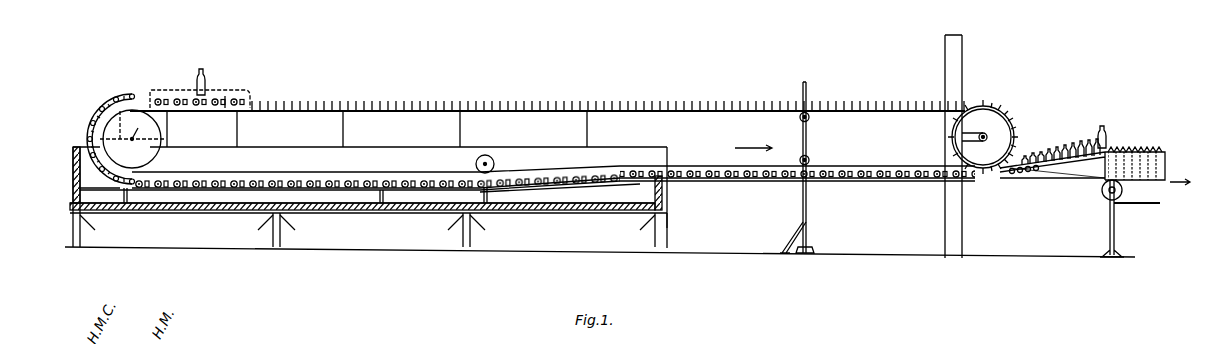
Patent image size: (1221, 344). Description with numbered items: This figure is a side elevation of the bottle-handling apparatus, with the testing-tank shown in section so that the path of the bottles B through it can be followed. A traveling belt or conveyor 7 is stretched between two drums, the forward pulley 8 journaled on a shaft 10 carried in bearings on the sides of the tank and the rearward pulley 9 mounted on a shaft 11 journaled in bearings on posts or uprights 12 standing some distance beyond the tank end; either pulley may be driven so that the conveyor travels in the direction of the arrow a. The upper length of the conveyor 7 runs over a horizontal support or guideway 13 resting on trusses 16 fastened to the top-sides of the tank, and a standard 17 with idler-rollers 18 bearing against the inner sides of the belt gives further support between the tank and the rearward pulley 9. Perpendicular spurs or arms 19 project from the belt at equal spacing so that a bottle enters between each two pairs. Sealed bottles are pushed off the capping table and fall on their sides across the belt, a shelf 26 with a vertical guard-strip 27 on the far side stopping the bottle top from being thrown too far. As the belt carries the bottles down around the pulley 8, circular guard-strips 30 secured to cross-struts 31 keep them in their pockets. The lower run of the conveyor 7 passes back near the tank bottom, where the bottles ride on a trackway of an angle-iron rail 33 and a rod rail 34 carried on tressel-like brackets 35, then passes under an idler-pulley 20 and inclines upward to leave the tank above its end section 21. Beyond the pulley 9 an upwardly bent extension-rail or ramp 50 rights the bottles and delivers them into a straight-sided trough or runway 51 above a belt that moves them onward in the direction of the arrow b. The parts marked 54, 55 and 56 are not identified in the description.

The traveling belt or conveyor 7 is at (170, 172).
The forward pulley 8 is at (132, 139).
The rearward pulley 9 is at (983, 137).
The shaft 10 is at (139, 127).
The shaft 11 is at (985, 141).
The posts or uprights 12 is at (947, 205).
The horizontal support or guideway 13 is at (398, 114).
The trusses 16 is at (178, 129).
The standard 17 is at (806, 222).
The idler-rollers 18 is at (809, 117).
The spurs or arms 19 is at (742, 110).
The idler-pulley 20 is at (494, 164).
The end section 21 is at (664, 201).
The shelf 26 is at (190, 96).
The vertical guard-strip 27 is at (226, 98).
The circular guard-strips 30 is at (100, 104).
The cross-struts 31 is at (135, 93).
The track or rail 33 is at (590, 182).
The track or rail 34 is at (96, 140).
The tressel-like brackets 35 is at (126, 204).
The extension-rail or ramp 50 is at (1086, 178).
The trough or runway 51 is at (1162, 152).
The arm 54 is at (1124, 204).
The wheel 55 is at (1103, 194).
The bottles on ramp 56 is at (1040, 162).
The bottles B is at (203, 74).
The arrow a is at (753, 142).
The arrow b is at (1180, 181).